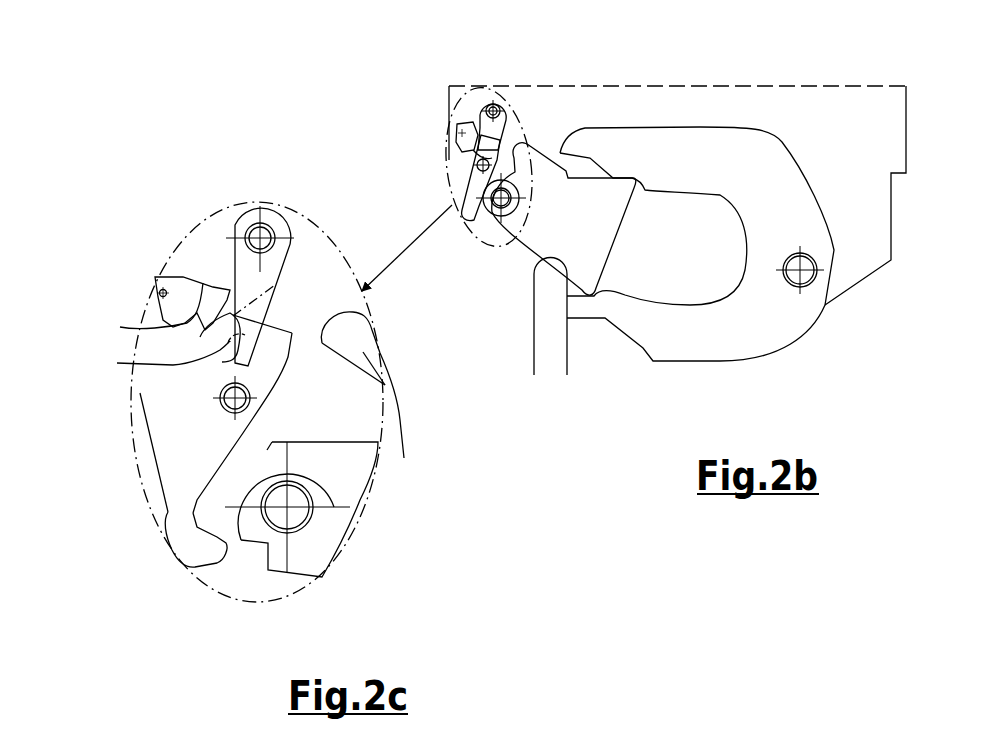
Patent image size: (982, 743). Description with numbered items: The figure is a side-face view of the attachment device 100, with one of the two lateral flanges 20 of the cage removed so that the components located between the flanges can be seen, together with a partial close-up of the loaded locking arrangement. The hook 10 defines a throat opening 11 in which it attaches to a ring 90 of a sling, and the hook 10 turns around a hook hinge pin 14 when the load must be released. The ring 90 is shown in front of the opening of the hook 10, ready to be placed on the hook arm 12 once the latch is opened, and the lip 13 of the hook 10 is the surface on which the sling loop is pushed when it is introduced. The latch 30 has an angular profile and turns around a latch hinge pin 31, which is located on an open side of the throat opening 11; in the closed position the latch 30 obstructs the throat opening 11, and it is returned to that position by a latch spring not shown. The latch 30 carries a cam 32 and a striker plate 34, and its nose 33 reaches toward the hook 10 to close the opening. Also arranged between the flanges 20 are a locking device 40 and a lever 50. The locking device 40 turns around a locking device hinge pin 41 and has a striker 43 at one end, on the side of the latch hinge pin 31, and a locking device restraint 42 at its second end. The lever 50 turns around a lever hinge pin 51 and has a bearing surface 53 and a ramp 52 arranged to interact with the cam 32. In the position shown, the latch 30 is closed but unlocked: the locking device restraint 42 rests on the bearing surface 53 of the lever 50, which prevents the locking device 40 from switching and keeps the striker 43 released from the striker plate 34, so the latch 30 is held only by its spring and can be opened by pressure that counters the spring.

In FIG. 2b, the attachment device 100 is at (869, 81).
In FIG. 2b, the hook 10 is at (745, 184).
In FIG. 2b, the throat opening 11 is at (660, 264).
In FIG. 2b, the hook arm 12 is at (613, 306).
In FIG. 2b, the lip 13 is at (533, 312).
In FIG. 2b, the hook hinge pin 14 is at (813, 283).
In FIG. 2b, the lateral flange 20 is at (842, 147).
In FIG. 2b, the latch 30 is at (573, 224).
In FIG. 2c, the latch 30 is at (367, 447).
In FIG. 2b, the latch hinge pin 31 is at (502, 215).
In FIG. 2c, the latch hinge pin 31 is at (292, 511).
In FIG. 2b, the cam 32 is at (537, 142).
In FIG. 2c, the cam 32 is at (404, 432).
In FIG. 2b, the pawl nose 33 is at (528, 222).
In FIG. 2c, the striker plate 34 is at (260, 554).
In FIG. 2b, the locking device 40 is at (459, 173).
In FIG. 2c, the locking device 40 is at (165, 519).
In FIG. 2b, the locking device hinge pin 41 is at (483, 165).
In FIG. 2c, the locking device hinge pin 41 is at (219, 398).
In FIG. 2b, the locking device restraint 42 is at (467, 137).
In FIG. 2c, the locking device restraint 42 is at (200, 320).
In FIG. 2c, the striker 43 is at (197, 553).
In FIG. 2b, the lever 50 is at (484, 122).
In FIG. 2c, the lever 50 is at (221, 288).
In FIG. 2b, the lever hinge pin 51 is at (493, 111).
In FIG. 2c, the lever hinge pin 51 is at (287, 222).
In FIG. 2b, the ramp 52 is at (492, 127).
In FIG. 2c, the ramp 52 is at (282, 287).
In FIG. 2b, the bearing surface 53 is at (482, 154).
In FIG. 2c, the bearing surface 53 is at (170, 362).
In FIG. 2b, the ring 90 is at (554, 355).